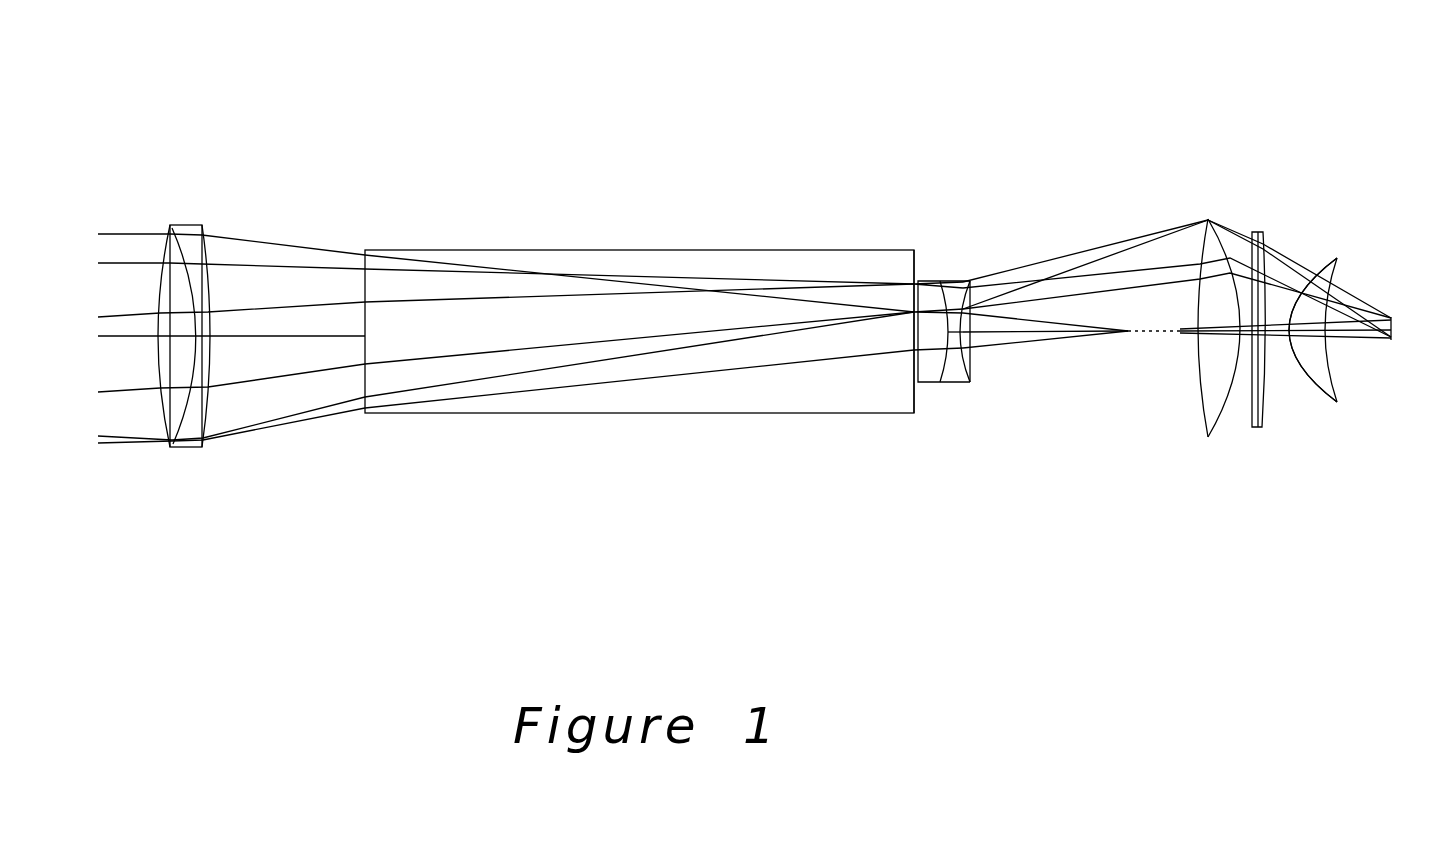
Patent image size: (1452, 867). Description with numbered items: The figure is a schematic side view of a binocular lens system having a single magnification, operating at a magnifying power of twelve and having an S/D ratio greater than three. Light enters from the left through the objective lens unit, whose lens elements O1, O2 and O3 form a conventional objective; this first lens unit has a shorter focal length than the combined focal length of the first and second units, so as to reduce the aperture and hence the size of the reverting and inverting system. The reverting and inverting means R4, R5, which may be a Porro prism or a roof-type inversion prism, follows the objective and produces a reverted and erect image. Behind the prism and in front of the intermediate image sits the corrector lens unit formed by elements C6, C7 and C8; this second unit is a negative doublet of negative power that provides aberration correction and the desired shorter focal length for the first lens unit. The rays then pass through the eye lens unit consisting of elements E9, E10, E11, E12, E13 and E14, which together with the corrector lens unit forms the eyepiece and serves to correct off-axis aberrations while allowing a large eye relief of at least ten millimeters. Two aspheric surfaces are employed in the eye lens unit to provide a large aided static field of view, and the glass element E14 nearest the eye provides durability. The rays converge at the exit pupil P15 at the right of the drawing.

The objective lens element O1 is at (165, 411).
The objective lens element O2 is at (187, 418).
The objective lens element O3 is at (207, 418).
The reverting and inverting means R4 is at (363, 375).
The reverting and inverting means R5 is at (916, 406).
The corrector lens element C6 is at (923, 383).
The corrector lens element C7 is at (945, 382).
The corrector lens element C8 is at (968, 370).
The eye lens element E9 is at (1200, 397).
The eye lens element E10 is at (1223, 435).
The eye lens element E11 is at (1252, 403).
The eye lens element E12 is at (1268, 412).
The eye lens element E13 is at (1309, 378).
The eye lens element E14 is at (1332, 367).
The exit pupil P15 is at (1392, 318).